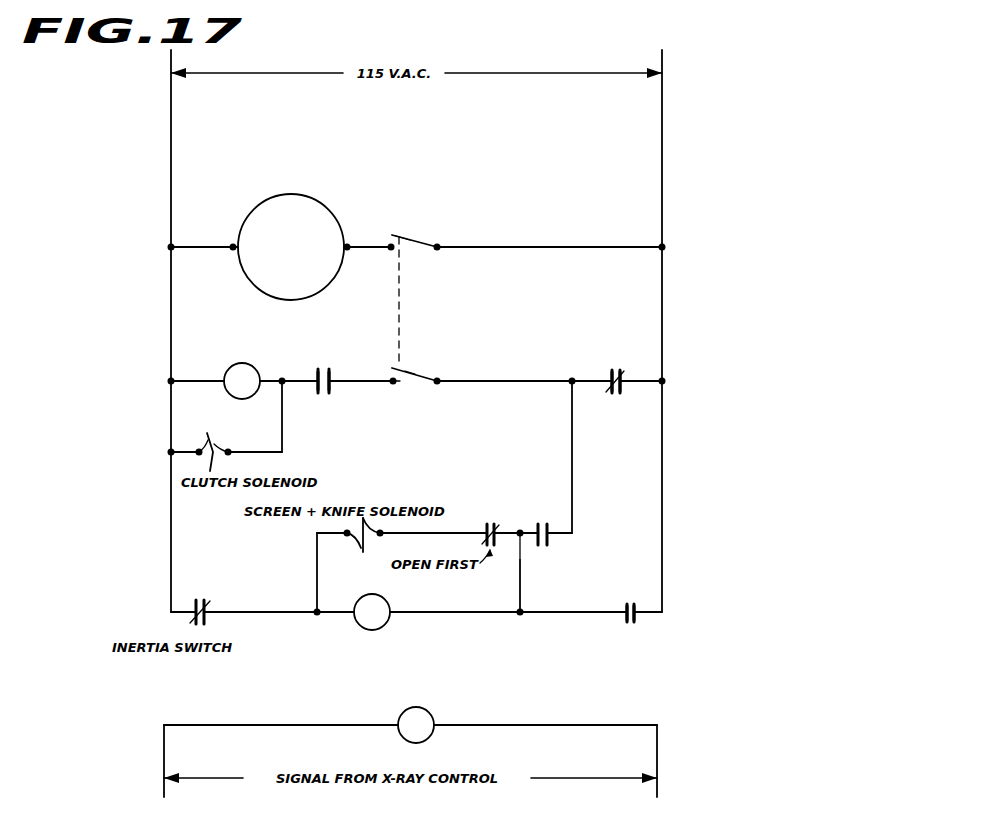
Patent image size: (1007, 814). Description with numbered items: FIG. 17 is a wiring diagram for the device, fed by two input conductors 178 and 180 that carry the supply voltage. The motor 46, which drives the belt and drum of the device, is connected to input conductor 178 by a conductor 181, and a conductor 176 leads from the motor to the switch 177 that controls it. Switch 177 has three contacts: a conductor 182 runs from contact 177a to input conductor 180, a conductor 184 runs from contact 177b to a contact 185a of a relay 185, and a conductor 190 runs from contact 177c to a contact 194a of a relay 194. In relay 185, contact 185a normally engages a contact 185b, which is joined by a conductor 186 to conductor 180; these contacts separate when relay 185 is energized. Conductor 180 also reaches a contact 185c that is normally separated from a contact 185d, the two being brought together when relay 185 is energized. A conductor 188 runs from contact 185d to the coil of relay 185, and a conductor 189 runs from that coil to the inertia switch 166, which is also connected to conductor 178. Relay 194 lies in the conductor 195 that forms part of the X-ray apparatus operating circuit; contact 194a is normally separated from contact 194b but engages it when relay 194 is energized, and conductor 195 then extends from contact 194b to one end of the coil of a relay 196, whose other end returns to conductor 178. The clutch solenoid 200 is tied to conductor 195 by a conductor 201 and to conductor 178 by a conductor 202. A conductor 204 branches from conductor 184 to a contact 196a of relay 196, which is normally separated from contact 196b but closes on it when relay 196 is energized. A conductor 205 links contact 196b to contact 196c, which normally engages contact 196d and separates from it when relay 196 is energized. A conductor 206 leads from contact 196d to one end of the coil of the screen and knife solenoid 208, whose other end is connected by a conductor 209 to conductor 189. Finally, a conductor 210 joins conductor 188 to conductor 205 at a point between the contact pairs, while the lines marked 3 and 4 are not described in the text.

The conductor 3 is at (572, 482).
The conductor 4 is at (520, 558).
The motor 46 is at (330, 221).
The switch 166 is at (200, 600).
The conductor 176 is at (368, 243).
The switch 177 is at (432, 245).
The contact 177a is at (416, 226).
The contact 177b is at (409, 374).
The contact 177c is at (391, 384).
The input conductor 178 is at (172, 132).
The input conductor 180 is at (662, 129).
The conductor 181 is at (188, 243).
The conductor 182 is at (572, 243).
The conductor 184 is at (511, 378).
The relay 185 is at (390, 623).
The contact 185a is at (607, 373).
The contact 185b is at (617, 370).
The contact 185c is at (636, 616).
The contact 185d is at (625, 610).
The conductor 186 is at (627, 380).
The conductor 188 is at (472, 615).
The conductor 189 is at (305, 615).
The conductor 190 is at (355, 378).
The relay 194 is at (431, 712).
The contact 194a is at (330, 368).
The contact 194b is at (315, 374).
The conductor 195 is at (292, 374).
The relay 196 is at (232, 369).
The contact 196a is at (546, 520).
The contact 196b is at (546, 548).
The contact 196c is at (493, 520).
The contact 196d is at (487, 520).
The solenoid 200 is at (209, 438).
The conductor 201 is at (283, 437).
The conductor 202 is at (181, 448).
The conductor 204 is at (572, 438).
The conductor 205 is at (512, 540).
The conductor 206 is at (462, 538).
The solenoid 208 is at (361, 551).
The conductor 209 is at (317, 578).
The conductor 210 is at (534, 602).